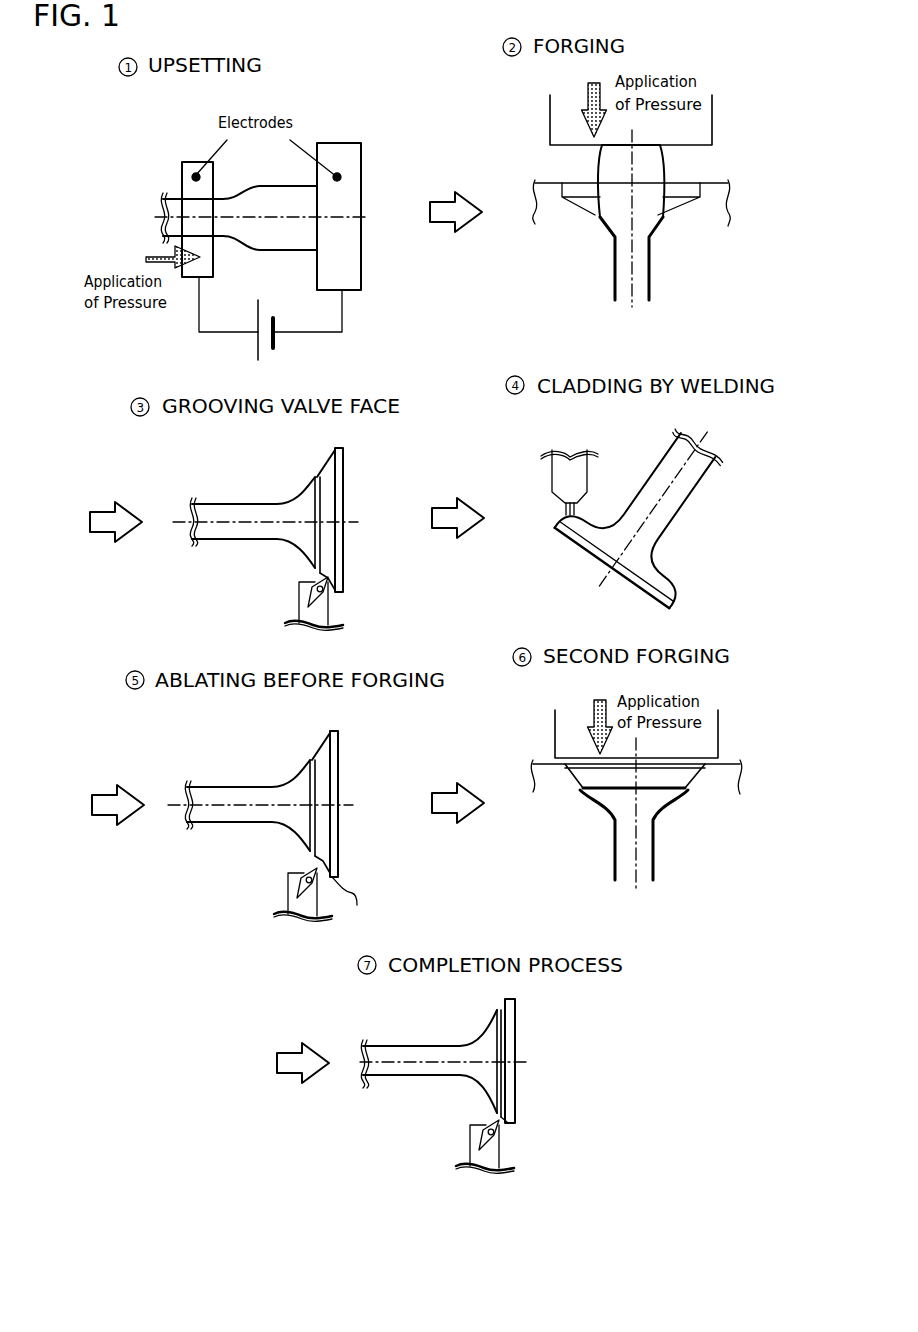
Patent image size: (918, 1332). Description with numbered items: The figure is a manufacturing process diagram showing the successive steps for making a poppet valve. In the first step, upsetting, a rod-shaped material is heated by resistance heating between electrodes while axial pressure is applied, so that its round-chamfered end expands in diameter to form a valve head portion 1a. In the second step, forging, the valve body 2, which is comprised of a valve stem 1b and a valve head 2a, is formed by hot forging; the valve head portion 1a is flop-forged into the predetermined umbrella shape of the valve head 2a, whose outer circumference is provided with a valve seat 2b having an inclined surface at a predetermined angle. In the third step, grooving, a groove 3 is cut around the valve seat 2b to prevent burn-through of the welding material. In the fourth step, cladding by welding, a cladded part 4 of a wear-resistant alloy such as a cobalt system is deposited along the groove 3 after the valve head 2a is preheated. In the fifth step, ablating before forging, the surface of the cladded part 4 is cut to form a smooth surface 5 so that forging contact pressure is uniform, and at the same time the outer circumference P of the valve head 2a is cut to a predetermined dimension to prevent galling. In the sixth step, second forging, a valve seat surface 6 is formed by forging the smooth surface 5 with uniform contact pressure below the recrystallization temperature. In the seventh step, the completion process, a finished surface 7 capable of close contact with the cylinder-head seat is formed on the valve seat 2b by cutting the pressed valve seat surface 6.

The valve head portion 1a is at (273, 253).
The valve stem 1b is at (620, 278).
The valve body 2 is at (612, 255).
The valve head 2a is at (690, 179).
The valve seat 2b is at (685, 208).
The groove 3 is at (326, 576).
The cladded part 4 is at (590, 518).
The smooth surface 5 is at (314, 867).
The valve seat surface 6 is at (588, 777).
The finished surface 7 is at (497, 1114).
The outer circumference P is at (351, 906).